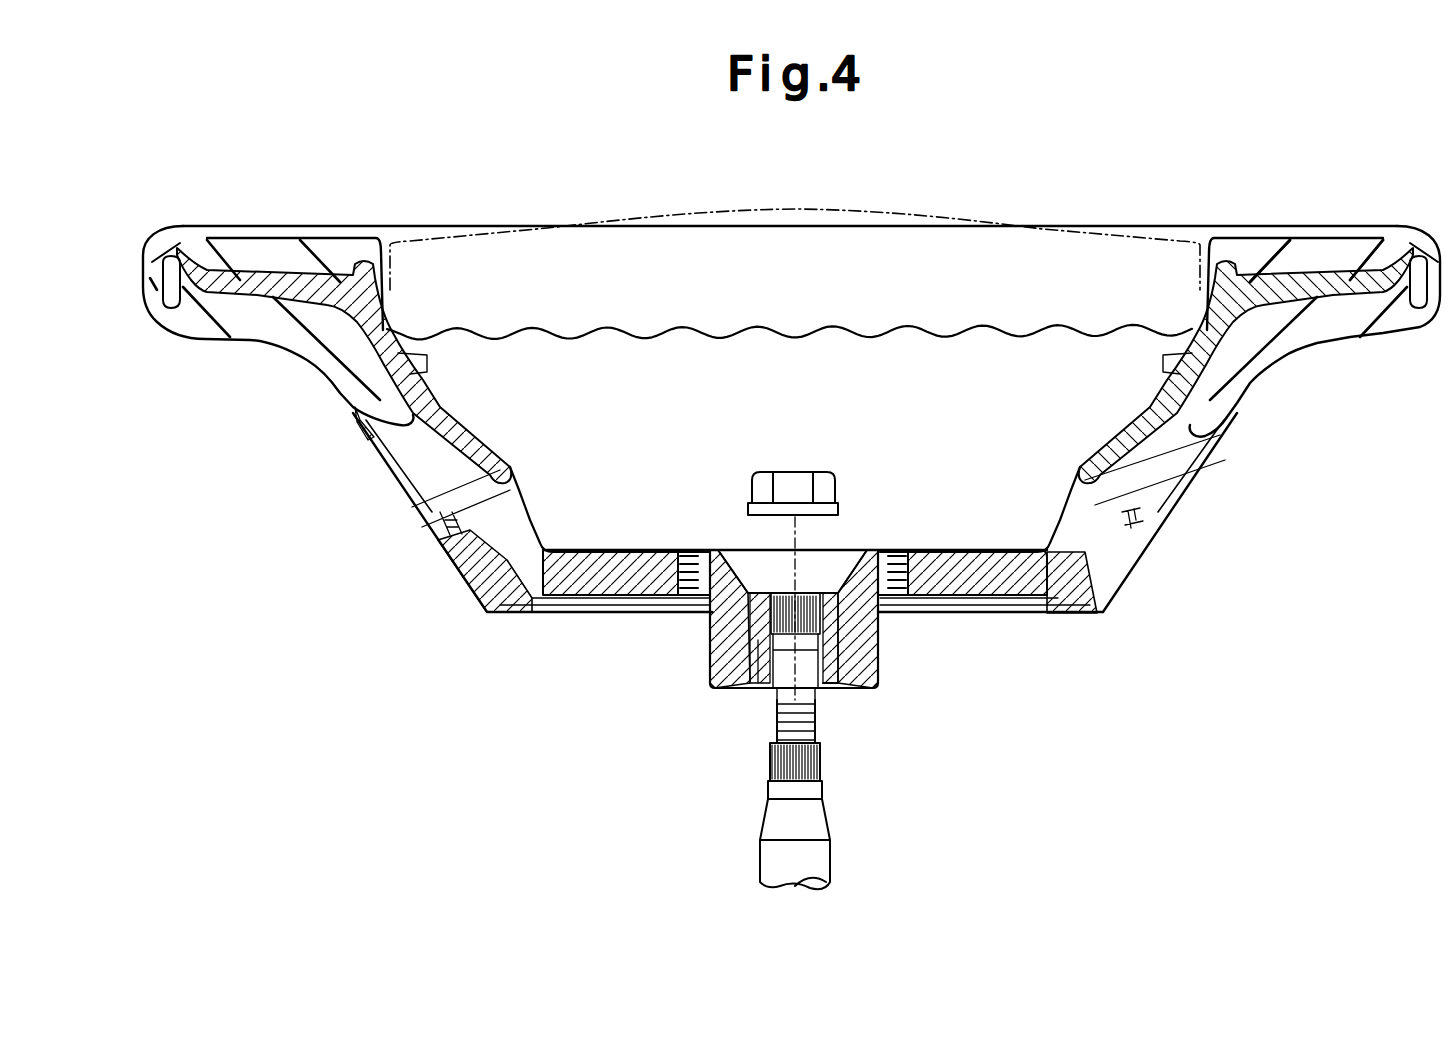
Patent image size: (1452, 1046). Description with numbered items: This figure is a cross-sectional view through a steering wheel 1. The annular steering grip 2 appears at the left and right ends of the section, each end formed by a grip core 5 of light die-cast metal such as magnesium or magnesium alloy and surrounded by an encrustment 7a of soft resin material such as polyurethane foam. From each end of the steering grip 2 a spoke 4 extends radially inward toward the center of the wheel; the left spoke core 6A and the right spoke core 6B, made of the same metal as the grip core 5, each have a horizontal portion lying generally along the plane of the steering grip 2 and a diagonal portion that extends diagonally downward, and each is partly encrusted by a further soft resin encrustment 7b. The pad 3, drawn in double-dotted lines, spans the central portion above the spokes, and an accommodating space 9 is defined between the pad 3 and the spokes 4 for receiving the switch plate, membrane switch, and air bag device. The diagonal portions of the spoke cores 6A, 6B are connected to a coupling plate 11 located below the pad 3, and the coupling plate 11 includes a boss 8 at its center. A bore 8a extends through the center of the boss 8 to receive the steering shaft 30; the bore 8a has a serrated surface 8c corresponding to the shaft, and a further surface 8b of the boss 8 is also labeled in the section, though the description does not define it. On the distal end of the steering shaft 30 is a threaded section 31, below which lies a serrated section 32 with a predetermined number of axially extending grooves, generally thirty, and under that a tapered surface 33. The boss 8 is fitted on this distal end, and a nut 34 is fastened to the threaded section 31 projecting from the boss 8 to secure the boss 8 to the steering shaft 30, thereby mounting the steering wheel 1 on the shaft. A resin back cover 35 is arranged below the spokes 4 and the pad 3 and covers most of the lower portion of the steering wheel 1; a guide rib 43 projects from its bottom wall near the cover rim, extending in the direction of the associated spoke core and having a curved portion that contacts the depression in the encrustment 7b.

The steering wheel 1 is at (1256, 155).
The steering grip 2 is at (163, 238).
The pad 3 is at (716, 205).
The spoke 4 is at (247, 236).
The grip core 5 is at (185, 252).
The spoke core 6A is at (300, 283).
The spoke core 6B is at (1328, 270).
The encrustment 7a is at (157, 315).
The encrustment 7b is at (243, 330).
The boss 8 is at (880, 662).
The bore 8a is at (776, 645).
The boss recess 8b is at (817, 568).
The serrated surface 8c is at (820, 683).
The accommodating space 9 is at (808, 415).
The coupling plate 11 is at (950, 548).
The steering shaft 30 is at (831, 846).
The threaded section 31 is at (814, 724).
The serrated section 32 is at (769, 758).
The tapered surface 33 is at (768, 815).
The nut 34 is at (838, 490).
The back cover 35 is at (467, 577).
The guide rib 43 is at (363, 433).